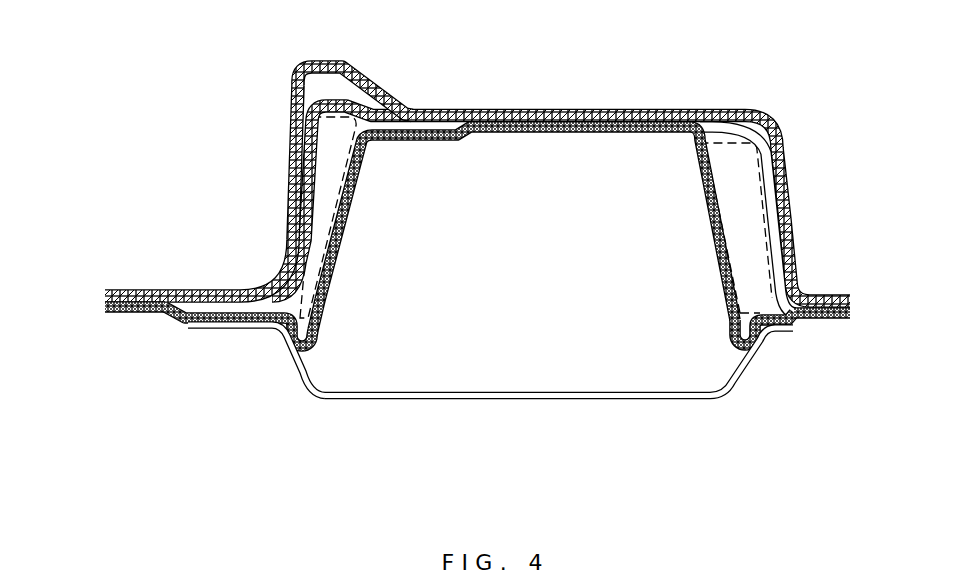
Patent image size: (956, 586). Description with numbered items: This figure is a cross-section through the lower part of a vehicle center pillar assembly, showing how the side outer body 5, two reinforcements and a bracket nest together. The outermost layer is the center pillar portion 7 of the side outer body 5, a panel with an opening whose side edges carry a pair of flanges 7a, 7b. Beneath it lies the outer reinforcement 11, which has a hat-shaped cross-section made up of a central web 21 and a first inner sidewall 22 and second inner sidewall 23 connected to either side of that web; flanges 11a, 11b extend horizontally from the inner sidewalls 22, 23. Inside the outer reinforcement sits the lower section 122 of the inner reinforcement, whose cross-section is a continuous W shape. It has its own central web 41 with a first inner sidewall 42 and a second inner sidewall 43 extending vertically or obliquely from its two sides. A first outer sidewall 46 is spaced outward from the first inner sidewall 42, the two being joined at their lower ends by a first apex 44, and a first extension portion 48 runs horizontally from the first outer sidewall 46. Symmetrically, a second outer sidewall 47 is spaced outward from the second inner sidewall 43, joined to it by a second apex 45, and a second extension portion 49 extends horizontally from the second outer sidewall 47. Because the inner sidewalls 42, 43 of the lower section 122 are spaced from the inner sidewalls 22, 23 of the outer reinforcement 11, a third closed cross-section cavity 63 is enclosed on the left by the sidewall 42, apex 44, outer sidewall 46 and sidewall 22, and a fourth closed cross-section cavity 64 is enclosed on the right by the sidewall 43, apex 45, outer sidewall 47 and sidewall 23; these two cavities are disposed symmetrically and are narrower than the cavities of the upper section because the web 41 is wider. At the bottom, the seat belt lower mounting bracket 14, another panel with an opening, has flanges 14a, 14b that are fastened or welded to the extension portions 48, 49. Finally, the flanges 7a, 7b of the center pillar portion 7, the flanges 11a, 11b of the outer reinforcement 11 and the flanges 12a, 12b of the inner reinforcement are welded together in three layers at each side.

The side outer body 5 is at (474, 245).
The center pillar portion 7 is at (588, 109).
The flange 7a is at (130, 290).
The flange 7b is at (828, 297).
The outer reinforcement 11 is at (413, 133).
The flange 11a is at (105, 302).
The flange 11b is at (852, 302).
The lower section 122 is at (596, 145).
The flange 12a is at (128, 312).
The flange 12b is at (821, 320).
The seat belt lower mounting bracket 14 is at (340, 399).
The flange 14a is at (208, 328).
The flange 14b is at (784, 331).
The central web 21 is at (396, 112).
The first inner sidewall 22 is at (299, 183).
The second inner sidewall 23 is at (778, 182).
The central web 41 is at (530, 133).
The first inner sidewall 42 is at (340, 240).
The second inner sidewall 43 is at (714, 248).
The first apex 44 is at (308, 361).
The second apex 45 is at (747, 351).
The first outer sidewall 46 is at (322, 318).
The second outer sidewall 47 is at (761, 328).
The first extension portion 48 is at (238, 328).
The second extension portion 49 is at (773, 312).
The third closed cross-section cavity 63 is at (313, 177).
The fourth closed cross-section cavity 64 is at (738, 220).